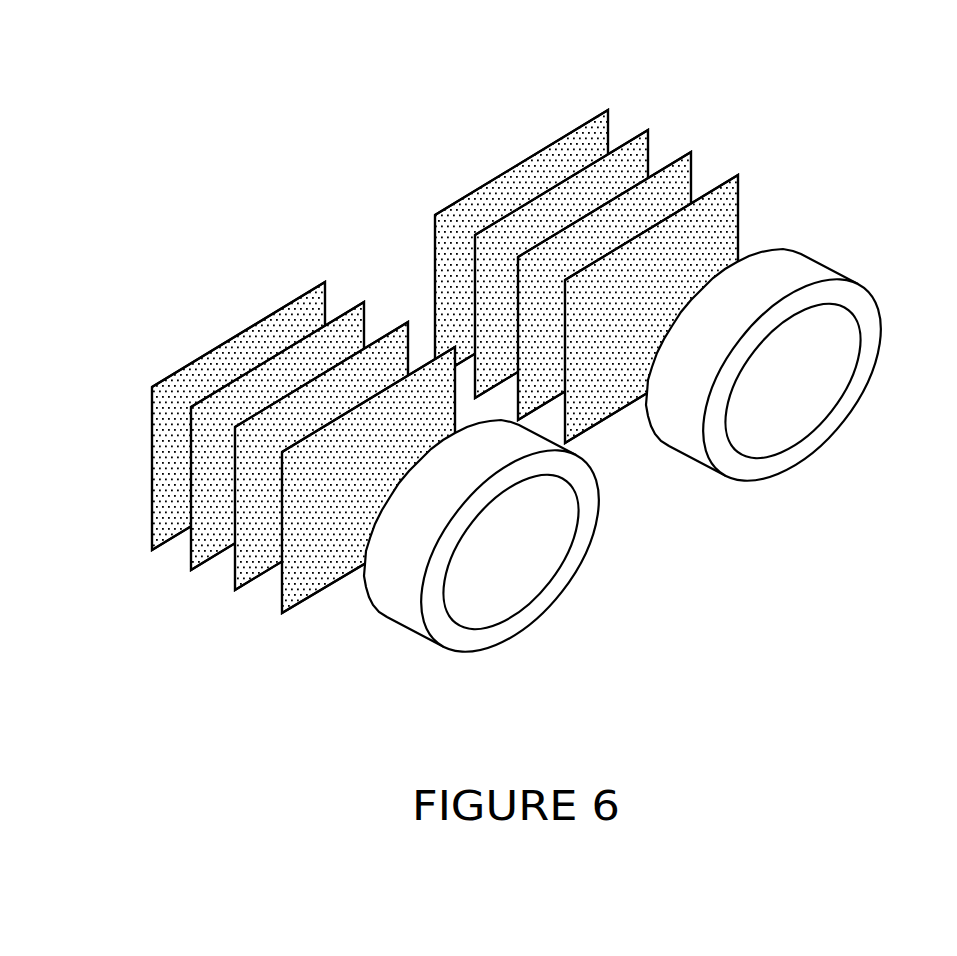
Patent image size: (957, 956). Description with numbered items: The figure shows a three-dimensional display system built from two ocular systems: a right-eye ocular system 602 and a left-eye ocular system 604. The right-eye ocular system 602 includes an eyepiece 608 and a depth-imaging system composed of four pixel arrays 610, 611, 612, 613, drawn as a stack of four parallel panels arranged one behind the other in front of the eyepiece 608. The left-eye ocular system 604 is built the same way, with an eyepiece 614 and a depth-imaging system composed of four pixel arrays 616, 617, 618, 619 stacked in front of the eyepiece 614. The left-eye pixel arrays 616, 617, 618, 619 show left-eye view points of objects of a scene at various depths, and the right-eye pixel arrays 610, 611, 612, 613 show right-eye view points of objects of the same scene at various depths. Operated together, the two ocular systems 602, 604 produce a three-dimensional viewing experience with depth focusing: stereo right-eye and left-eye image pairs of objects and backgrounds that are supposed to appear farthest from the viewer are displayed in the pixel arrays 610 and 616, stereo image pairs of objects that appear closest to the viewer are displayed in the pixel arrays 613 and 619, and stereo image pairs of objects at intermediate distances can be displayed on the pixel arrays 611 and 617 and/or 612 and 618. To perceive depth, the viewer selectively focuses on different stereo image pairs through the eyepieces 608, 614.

The right-eye ocular system 602 is at (669, 284).
The left-eye ocular system 604 is at (353, 483).
The eyepiece 608 is at (830, 267).
The pixel array 610 is at (608, 120).
The pixel array 611 is at (650, 150).
The pixel array 612 is at (692, 186).
The pixel array 613 is at (738, 237).
The eyepiece 614 is at (402, 612).
The pixel array 616 is at (167, 541).
The pixel array 617 is at (217, 554).
The pixel array 618 is at (265, 573).
The pixel array 619 is at (332, 584).